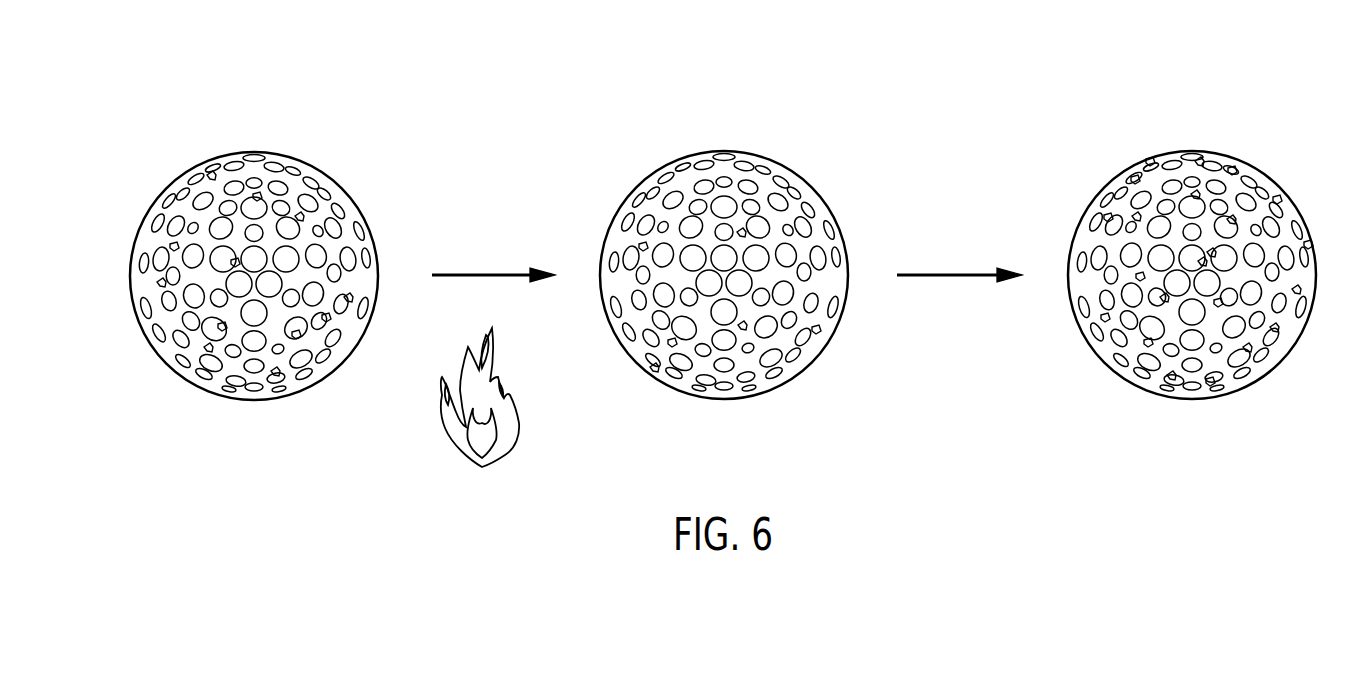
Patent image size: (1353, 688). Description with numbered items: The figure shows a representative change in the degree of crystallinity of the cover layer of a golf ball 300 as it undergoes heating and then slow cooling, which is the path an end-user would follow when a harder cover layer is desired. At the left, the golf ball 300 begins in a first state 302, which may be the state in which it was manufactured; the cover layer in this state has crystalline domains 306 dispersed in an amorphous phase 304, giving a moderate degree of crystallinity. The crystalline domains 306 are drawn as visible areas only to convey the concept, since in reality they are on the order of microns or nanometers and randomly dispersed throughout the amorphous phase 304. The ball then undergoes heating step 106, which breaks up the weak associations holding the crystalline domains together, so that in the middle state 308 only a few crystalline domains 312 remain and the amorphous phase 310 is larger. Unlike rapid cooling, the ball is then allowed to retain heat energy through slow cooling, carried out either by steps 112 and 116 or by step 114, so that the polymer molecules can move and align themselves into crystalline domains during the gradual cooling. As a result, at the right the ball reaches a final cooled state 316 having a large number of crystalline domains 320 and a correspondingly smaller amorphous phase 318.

The golf ball 300 is at (243, 151).
The first state 302 is at (226, 235).
The amorphous phase 304 is at (185, 210).
The crystalline domains 306 is at (258, 192).
The state after heating 308 is at (752, 249).
The amorphous phase 310 is at (655, 210).
The crystalline domains 312 is at (670, 348).
The slow cooled golf ball 316 is at (1183, 261).
The amorphous phase 318 is at (1120, 208).
The crystalline domains 320 is at (1146, 348).
The heating step 106 is at (481, 203).
The slow cooling step 112 is at (959, 196).
The slow cooling step 116 is at (959, 182).
The slow cooling step 114 is at (977, 206).